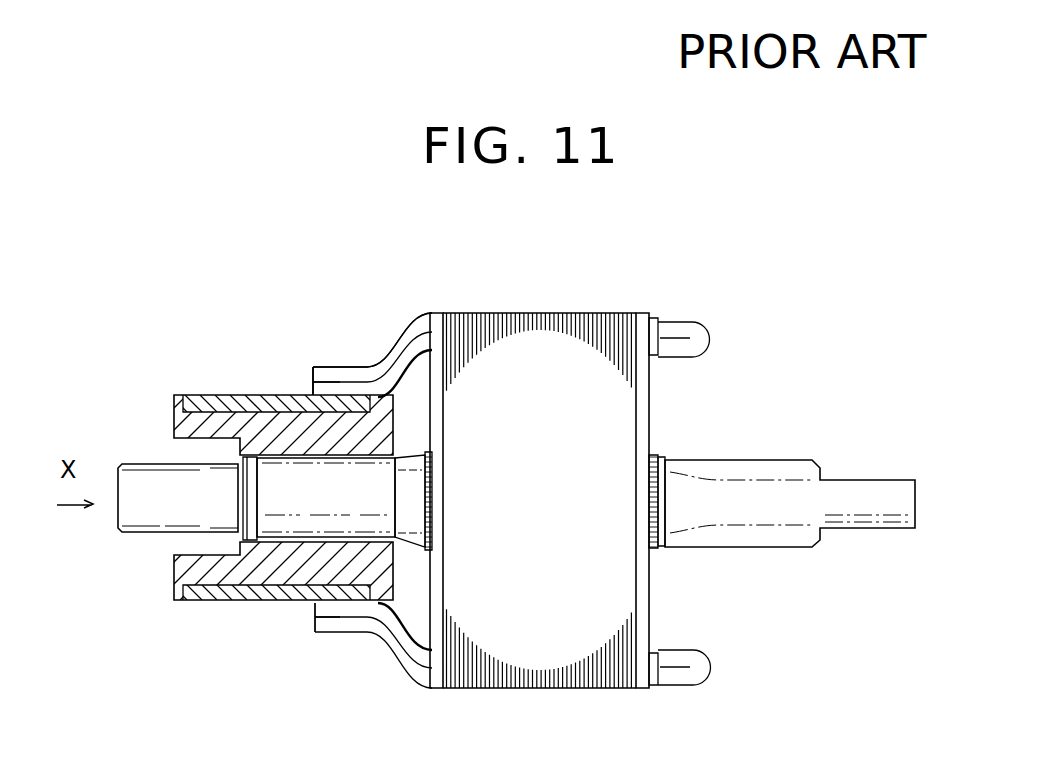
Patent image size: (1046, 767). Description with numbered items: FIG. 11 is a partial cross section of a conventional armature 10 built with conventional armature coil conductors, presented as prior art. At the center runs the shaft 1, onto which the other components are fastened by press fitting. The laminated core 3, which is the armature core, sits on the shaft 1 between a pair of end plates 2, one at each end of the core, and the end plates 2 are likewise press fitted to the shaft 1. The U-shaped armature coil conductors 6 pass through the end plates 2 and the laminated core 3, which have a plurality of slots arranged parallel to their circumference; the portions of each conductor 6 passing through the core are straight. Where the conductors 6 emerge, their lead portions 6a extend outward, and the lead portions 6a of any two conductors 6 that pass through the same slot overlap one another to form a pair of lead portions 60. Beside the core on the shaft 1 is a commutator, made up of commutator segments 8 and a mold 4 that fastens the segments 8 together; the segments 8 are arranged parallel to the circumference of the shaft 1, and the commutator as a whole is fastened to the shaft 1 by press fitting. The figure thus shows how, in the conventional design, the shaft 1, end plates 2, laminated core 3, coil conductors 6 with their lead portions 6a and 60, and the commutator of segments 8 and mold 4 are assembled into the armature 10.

The shaft 1 is at (148, 520).
The end plate 2 is at (438, 685).
The laminated core 3 is at (500, 680).
The mold 4 is at (190, 600).
The armature coil conductor 6 is at (400, 665).
The lead portion 6a is at (310, 620).
The commutator segment 8 is at (215, 597).
The armature 10 is at (568, 485).
The pair of lead portions 60 is at (313, 368).